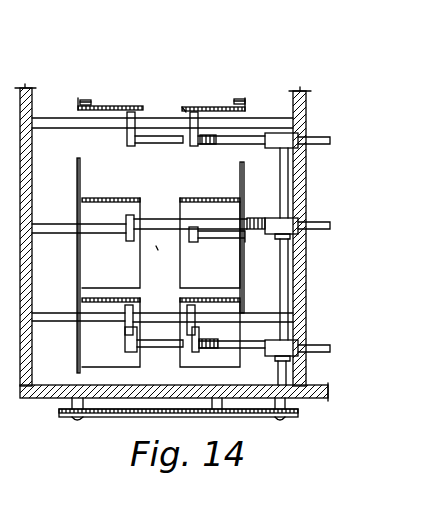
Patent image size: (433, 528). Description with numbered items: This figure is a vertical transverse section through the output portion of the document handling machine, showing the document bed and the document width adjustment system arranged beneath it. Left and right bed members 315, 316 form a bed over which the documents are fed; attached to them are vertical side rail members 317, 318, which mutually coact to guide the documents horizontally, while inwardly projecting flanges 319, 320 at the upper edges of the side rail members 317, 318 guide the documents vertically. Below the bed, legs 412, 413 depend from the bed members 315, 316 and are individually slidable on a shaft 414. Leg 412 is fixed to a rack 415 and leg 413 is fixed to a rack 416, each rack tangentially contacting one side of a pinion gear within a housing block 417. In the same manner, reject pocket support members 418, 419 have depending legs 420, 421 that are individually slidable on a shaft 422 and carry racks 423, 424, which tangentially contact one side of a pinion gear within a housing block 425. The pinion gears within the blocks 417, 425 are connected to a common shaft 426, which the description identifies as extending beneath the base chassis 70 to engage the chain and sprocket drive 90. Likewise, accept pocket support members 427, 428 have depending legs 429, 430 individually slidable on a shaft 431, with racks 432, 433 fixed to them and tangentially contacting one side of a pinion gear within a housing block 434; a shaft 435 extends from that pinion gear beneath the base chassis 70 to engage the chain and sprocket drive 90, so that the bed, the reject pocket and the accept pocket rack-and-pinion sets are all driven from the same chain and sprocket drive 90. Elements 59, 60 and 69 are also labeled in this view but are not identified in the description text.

The lower shaft 59 is at (125, 334).
The pivot pin 60 is at (156, 248).
The right frame wall 69 is at (302, 112).
The base chassis 70 is at (62, 390).
The chain and sprocket drive 90 is at (262, 418).
The left bed member 315 is at (184, 107).
The right bed member 316 is at (100, 106).
The vertical side rail member 317 is at (245, 104).
The vertical side rail member 318 is at (80, 100).
The inwardly projecting flange 319 is at (238, 99).
The inwardly projecting flange 320 is at (84, 100).
The leg 412 is at (192, 112).
The leg 413 is at (136, 113).
The shaft 414 is at (86, 122).
The rack 415 is at (209, 142).
The rack 416 is at (225, 142).
The housing block 417 is at (280, 140).
The reject pocket support member 418 is at (226, 268).
The reject pocket support member 419 is at (92, 271).
The leg 420 is at (193, 242).
The leg 421 is at (126, 229).
The shaft 422 is at (36, 225).
The rack 423 is at (253, 230).
The rack 424 is at (263, 218).
The housing block 425 is at (298, 221).
The vertical rod 426 is at (284, 288).
The accept pocket support member 427 is at (227, 336).
The accept pocket support member 428 is at (93, 355).
The leg 429 is at (188, 312).
The leg 430 is at (129, 312).
The shaft 431 is at (43, 316).
The rack 432 is at (193, 342).
The rack 433 is at (222, 349).
The housing block 434 is at (298, 348).
The shaft 435 is at (288, 371).